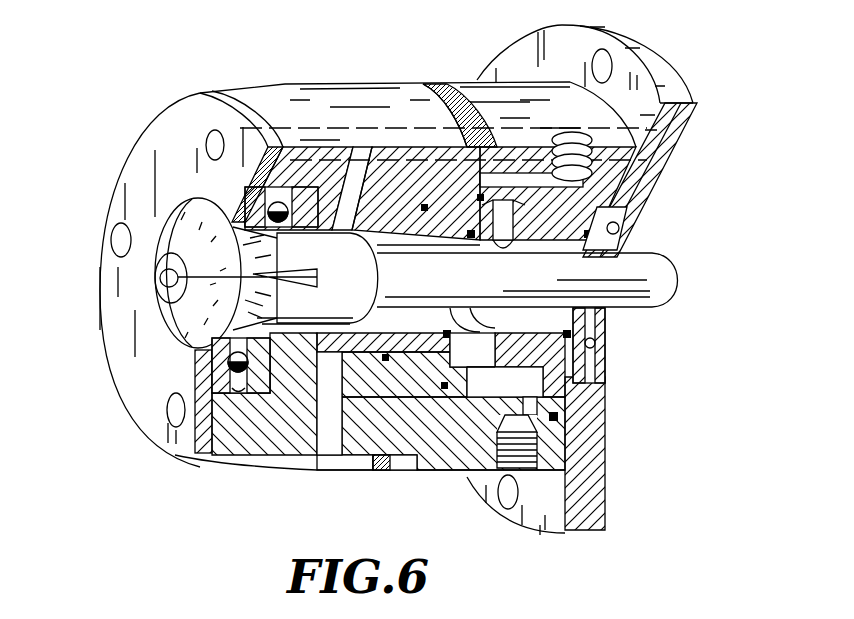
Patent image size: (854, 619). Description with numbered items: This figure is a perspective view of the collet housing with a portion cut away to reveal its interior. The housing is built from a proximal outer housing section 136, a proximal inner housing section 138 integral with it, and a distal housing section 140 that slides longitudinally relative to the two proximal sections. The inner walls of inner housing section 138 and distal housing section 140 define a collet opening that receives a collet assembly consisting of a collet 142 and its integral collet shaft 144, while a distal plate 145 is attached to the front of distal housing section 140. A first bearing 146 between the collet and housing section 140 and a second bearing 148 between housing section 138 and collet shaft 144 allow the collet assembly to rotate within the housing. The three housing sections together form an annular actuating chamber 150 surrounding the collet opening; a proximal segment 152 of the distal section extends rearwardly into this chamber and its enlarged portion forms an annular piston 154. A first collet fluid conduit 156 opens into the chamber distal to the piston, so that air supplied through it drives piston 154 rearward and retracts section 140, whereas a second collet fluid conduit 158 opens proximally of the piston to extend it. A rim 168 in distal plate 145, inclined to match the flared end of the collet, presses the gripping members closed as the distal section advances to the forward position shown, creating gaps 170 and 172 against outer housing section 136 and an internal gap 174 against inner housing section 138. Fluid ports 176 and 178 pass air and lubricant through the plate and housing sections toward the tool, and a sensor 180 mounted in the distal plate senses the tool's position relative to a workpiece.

The proximal outer housing section 136 is at (473, 90).
The proximal inner housing section 138 is at (600, 209).
The distal housing section 140 is at (270, 93).
The collet 142 is at (373, 272).
The collet shaft 144 is at (660, 278).
The distal plate 145 is at (137, 140).
The first bearing 146 is at (229, 363).
The second bearing 148 is at (597, 345).
The collet housing actuating chamber 150 is at (493, 390).
The proximal segment 152 is at (390, 340).
The annular piston 154 is at (497, 225).
The first collet fluid conduit 156 is at (656, 78).
The second collet fluid conduit 158 is at (530, 483).
The rim 168 is at (230, 215).
The gap 170 is at (332, 438).
The gap 172 is at (392, 470).
The internal gap 174 is at (458, 333).
The fluid port 176 is at (207, 133).
The fluid port 178 is at (169, 421).
The sensor 180 is at (116, 240).